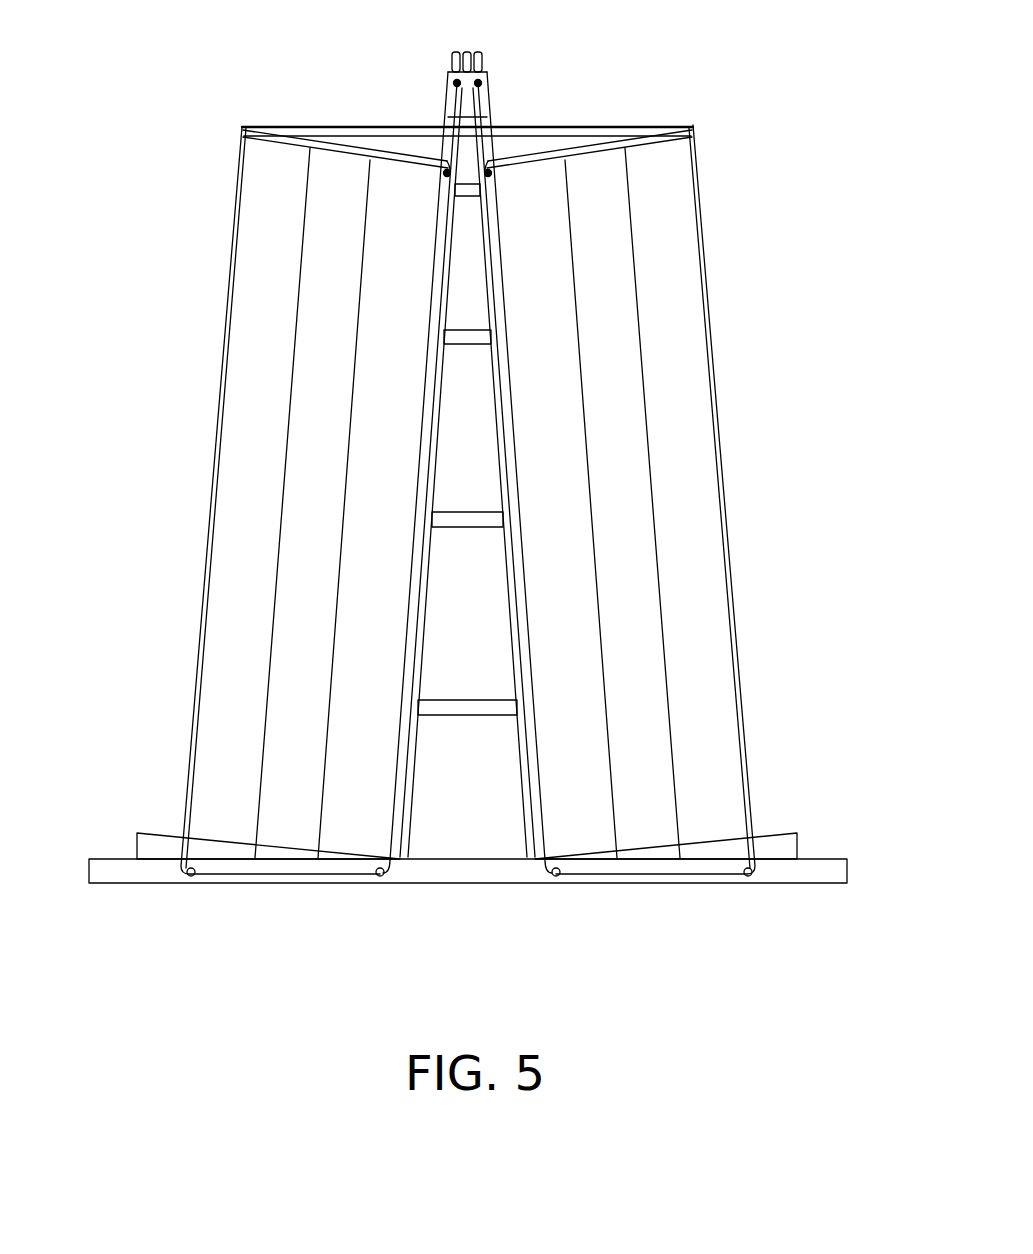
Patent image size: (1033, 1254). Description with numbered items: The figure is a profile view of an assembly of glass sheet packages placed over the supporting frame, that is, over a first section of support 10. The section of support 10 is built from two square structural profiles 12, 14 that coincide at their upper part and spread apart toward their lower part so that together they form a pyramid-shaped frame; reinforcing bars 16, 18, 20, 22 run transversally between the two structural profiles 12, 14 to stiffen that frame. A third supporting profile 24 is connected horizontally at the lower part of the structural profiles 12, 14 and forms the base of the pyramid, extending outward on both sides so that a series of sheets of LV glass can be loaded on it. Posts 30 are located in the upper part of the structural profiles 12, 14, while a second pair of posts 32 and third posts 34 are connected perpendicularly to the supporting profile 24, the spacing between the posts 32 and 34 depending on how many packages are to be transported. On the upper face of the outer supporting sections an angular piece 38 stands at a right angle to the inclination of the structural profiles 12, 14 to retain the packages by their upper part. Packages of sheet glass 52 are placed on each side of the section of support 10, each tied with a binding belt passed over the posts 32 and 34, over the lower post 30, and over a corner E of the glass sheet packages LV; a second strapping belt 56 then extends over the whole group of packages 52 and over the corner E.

The first section of support 10 is at (508, 96).
The square structural profile 12 is at (424, 468).
The square structural profile 14 is at (470, 472).
The reinforcing bar 16 is at (465, 191).
The reinforcing bar 18 is at (471, 337).
The reinforcing bar 20 is at (471, 516).
The reinforcing bar 22 is at (471, 708).
The third supporting profile 24 is at (472, 885).
The first pair of posts 30 is at (446, 164).
The second pair of posts 32 is at (380, 885).
The third posts 34 is at (190, 885).
The angular piece 38 is at (152, 857).
The package of sheet glass 52 is at (467, 499).
The second strapping belt 56 is at (354, 128).
The corner of the glass sheet packages E is at (700, 121).
The LV glass sheets LV is at (567, 648).